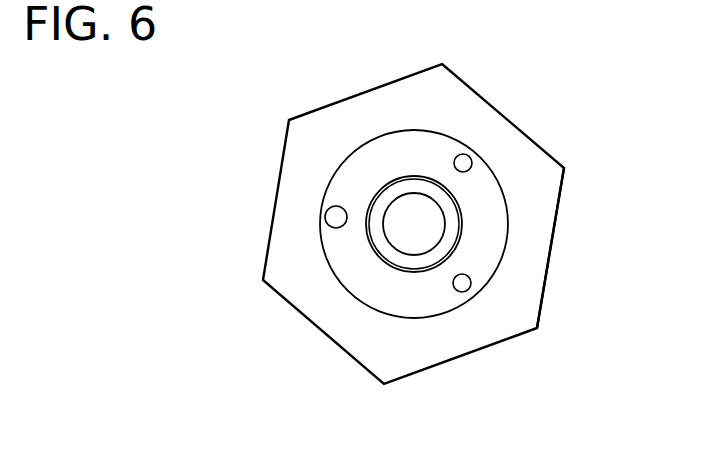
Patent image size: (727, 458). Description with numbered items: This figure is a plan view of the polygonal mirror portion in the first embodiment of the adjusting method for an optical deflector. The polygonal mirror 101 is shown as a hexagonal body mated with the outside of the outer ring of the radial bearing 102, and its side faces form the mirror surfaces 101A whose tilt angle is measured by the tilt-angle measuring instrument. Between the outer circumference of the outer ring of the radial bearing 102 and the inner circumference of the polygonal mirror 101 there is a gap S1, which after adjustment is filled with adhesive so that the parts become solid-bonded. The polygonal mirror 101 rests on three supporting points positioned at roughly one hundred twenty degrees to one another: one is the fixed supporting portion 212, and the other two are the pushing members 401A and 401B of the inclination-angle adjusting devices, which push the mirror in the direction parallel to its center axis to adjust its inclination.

The polygonal mirror 101 is at (500, 122).
The mirror surface 101A is at (558, 220).
The radial bearing 102 is at (388, 195).
The fixed supporting portion 212 is at (324, 215).
The gap S1 is at (372, 248).
The pushing member 401A is at (472, 163).
The pushing member 401B is at (471, 282).